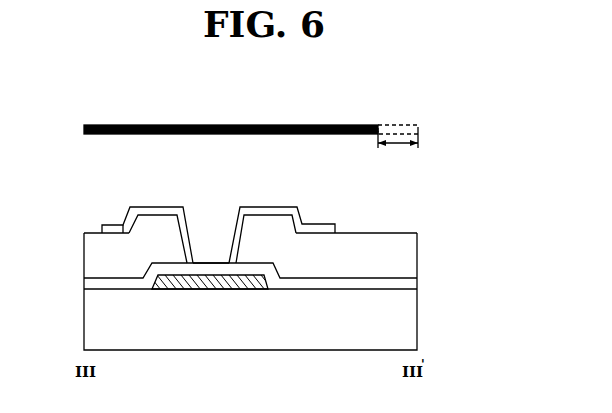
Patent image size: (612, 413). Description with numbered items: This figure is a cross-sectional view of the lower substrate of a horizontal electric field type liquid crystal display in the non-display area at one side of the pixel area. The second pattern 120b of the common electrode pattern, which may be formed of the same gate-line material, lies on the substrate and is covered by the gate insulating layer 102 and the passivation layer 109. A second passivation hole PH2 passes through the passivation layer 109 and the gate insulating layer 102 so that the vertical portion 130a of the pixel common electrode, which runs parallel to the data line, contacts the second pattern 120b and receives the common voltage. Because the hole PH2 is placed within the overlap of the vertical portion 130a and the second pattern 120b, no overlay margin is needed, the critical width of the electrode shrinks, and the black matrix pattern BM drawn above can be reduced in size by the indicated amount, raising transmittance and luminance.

The black matrix pattern BM is at (83, 129).
The second passivation hole PH2 is at (214, 220).
The vertical portion 130a is at (317, 228).
The passivation layer 109 is at (413, 283).
The gate insulating layer 102 is at (413, 256).
The second pattern 120b is at (205, 289).